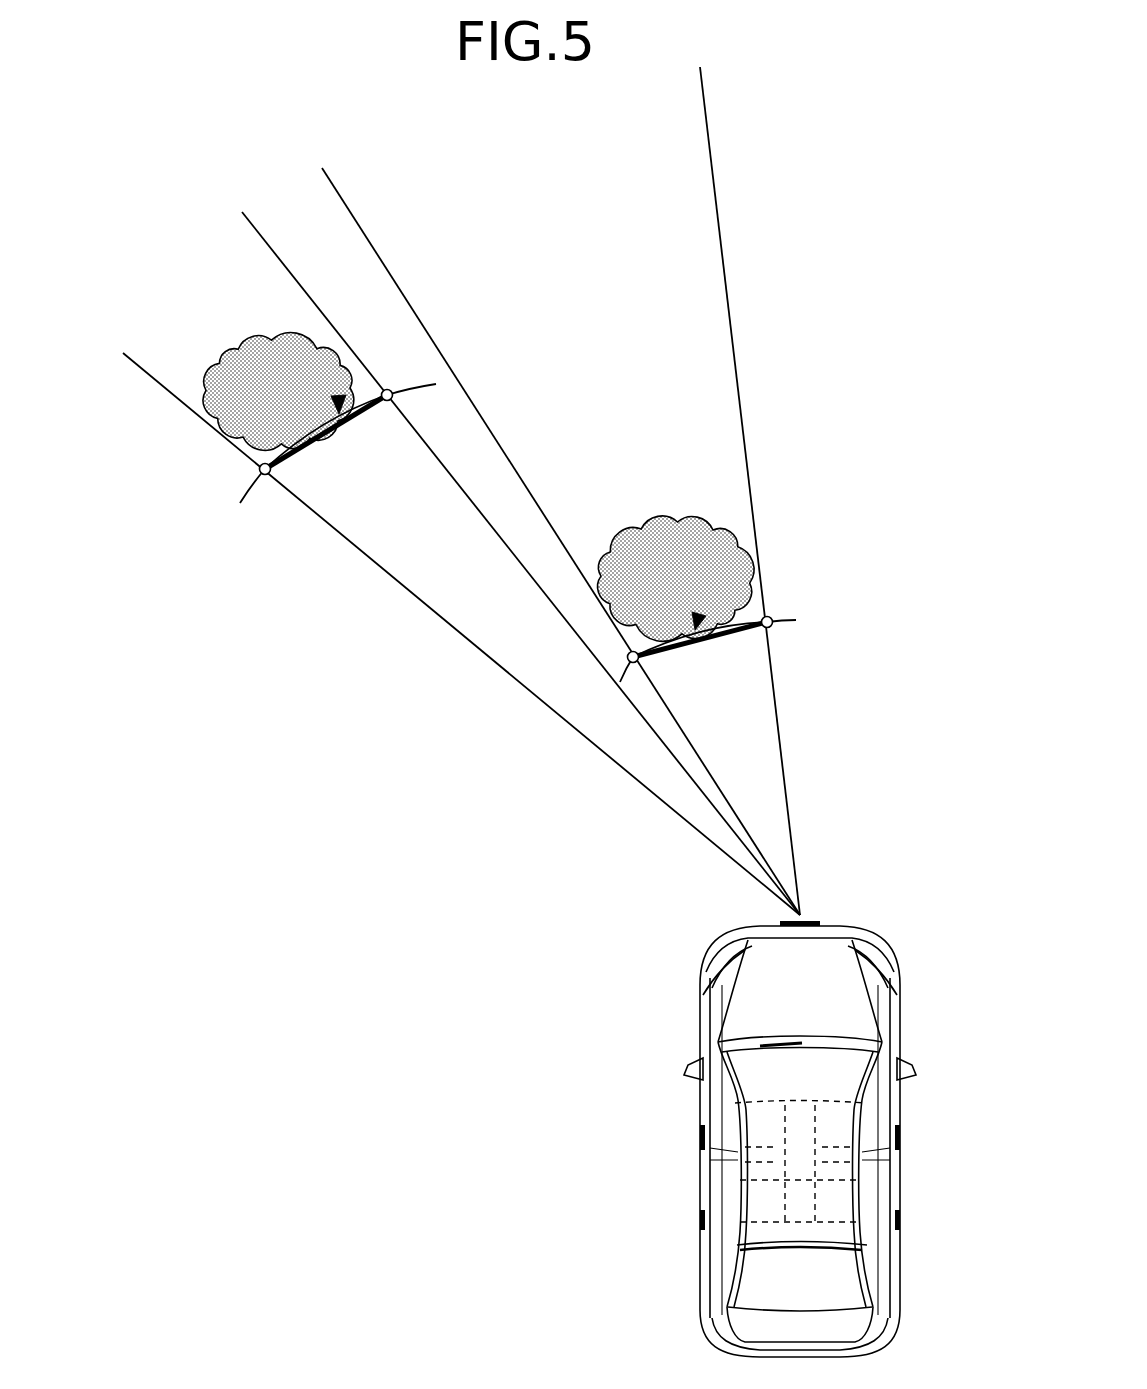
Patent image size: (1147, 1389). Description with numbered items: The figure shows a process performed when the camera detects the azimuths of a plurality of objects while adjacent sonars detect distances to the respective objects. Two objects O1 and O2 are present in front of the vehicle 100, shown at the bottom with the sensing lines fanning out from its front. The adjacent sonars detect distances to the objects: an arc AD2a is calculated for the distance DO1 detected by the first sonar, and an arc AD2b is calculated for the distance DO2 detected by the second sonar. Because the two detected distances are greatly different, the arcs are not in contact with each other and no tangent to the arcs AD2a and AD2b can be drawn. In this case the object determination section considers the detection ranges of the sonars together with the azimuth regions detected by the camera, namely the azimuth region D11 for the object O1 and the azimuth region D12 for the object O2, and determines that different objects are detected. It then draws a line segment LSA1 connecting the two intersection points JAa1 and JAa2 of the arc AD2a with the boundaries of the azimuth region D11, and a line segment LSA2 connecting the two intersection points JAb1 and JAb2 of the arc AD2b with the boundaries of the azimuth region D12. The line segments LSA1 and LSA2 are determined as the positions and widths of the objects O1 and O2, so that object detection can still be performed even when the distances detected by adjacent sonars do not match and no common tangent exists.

The vehicle 100 is at (716, 1277).
The object O1 is at (278, 392).
The object O2 is at (676, 578).
The distance DO1 is at (340, 404).
The distance DO2 is at (697, 620).
The intersection point JAa1 is at (259, 473).
The intersection point JAa2 is at (389, 390).
The intersection point JAb1 is at (633, 663).
The intersection point JAb2 is at (769, 613).
The line segment LSA1 is at (341, 428).
The line segment LSA2 is at (703, 648).
The arc AD2a is at (241, 503).
The arc AD2b is at (788, 622).
The azimuth region D11 is at (669, 784).
The azimuth region D12 is at (763, 780).